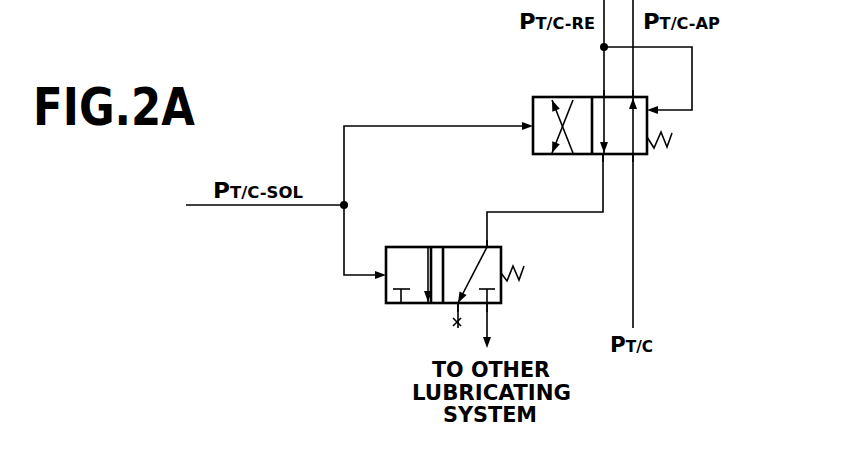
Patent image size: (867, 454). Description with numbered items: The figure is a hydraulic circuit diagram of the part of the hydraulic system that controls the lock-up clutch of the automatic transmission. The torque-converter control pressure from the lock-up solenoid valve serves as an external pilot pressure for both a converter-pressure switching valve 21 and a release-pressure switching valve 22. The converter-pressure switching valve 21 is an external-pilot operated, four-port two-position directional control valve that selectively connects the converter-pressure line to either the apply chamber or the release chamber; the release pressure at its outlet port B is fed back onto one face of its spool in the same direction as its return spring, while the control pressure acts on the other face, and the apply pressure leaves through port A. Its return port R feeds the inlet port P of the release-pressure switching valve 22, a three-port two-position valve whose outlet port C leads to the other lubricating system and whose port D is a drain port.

The converter-pressure switching valve 21 is at (637, 159).
The release-pressure switching valve 22 is at (455, 245).
The port A is at (643, 84).
The outlet port B is at (593, 84).
The return port R is at (593, 169).
The inlet port P is at (571, 200).
The outlet port C is at (498, 320).
The drain port D is at (446, 320).